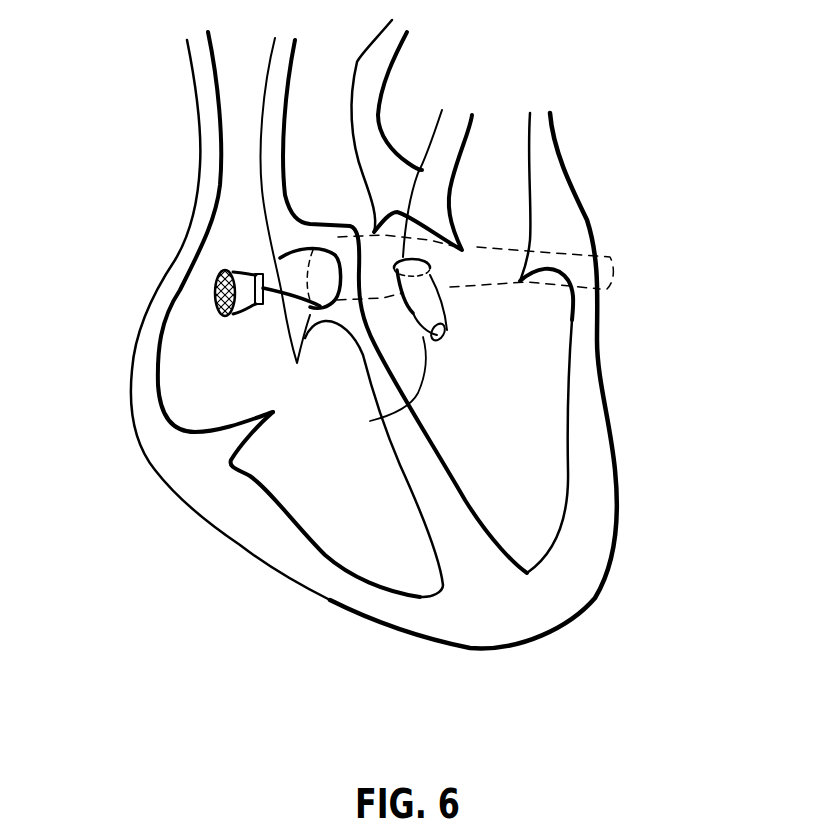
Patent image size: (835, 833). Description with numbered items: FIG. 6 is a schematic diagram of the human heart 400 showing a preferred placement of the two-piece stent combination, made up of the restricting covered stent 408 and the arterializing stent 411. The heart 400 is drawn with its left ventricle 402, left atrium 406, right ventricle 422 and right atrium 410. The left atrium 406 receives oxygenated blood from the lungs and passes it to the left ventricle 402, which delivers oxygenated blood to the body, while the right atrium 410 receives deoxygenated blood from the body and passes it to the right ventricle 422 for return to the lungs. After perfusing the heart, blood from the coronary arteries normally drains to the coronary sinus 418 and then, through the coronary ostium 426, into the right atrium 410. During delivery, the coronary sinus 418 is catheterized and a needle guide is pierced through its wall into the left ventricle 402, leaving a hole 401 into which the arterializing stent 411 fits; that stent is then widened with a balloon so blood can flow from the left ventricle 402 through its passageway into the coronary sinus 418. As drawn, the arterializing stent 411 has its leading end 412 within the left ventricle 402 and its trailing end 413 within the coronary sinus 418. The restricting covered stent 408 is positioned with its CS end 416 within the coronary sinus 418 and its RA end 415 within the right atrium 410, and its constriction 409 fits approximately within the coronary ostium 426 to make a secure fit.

The human heart 400 is at (597, 600).
The hole 401 is at (375, 394).
The left ventricle 402 is at (550, 403).
The left atrium 406 is at (497, 193).
The restricting covered stent 408 is at (306, 312).
The constriction 409 is at (263, 305).
The right atrium 410 is at (190, 342).
The arterializing stent 411 is at (452, 300).
The leading end 412 is at (437, 334).
The trailing end 413 is at (420, 168).
The RA end 415 is at (217, 290).
The CS end 416 is at (333, 262).
The coronary sinus 418 is at (480, 247).
The right ventricle 422 is at (340, 525).
The coronary ostium 426 is at (262, 273).